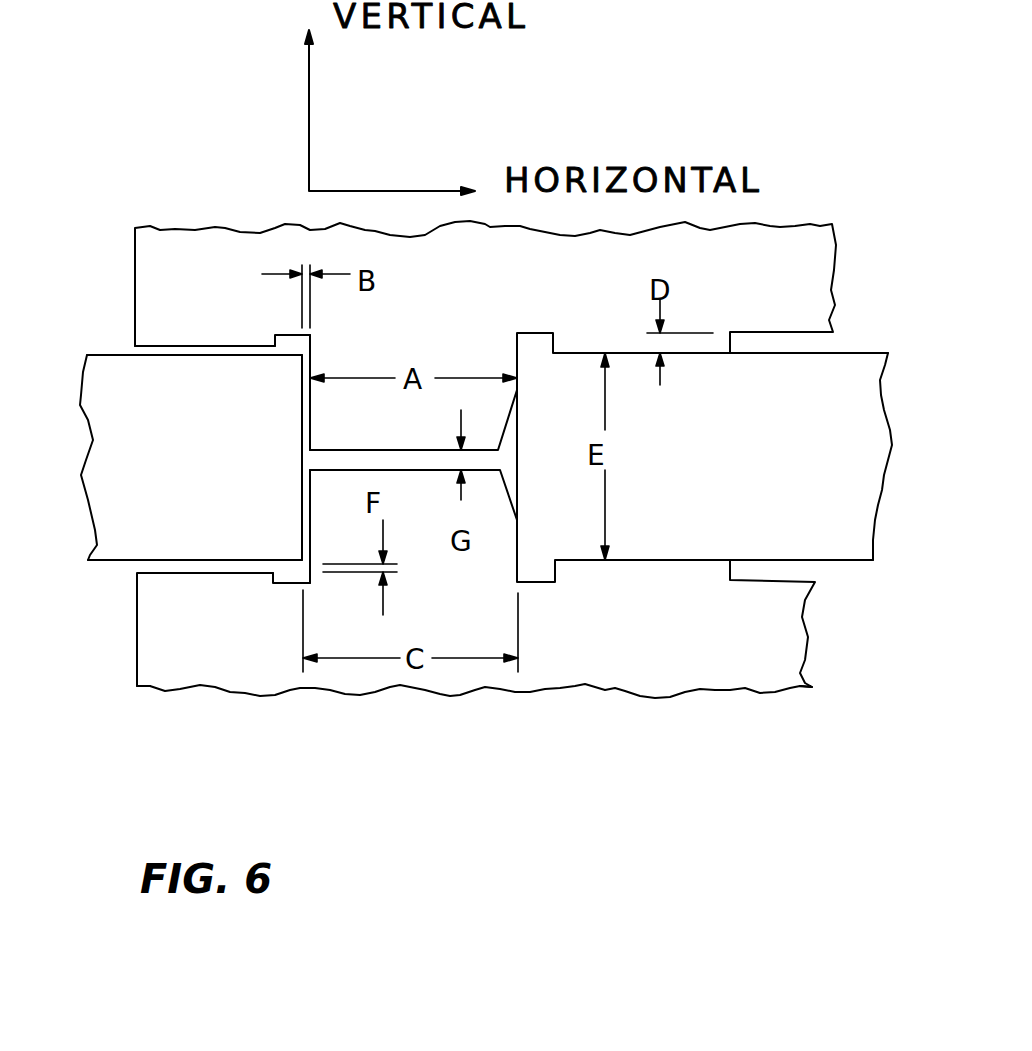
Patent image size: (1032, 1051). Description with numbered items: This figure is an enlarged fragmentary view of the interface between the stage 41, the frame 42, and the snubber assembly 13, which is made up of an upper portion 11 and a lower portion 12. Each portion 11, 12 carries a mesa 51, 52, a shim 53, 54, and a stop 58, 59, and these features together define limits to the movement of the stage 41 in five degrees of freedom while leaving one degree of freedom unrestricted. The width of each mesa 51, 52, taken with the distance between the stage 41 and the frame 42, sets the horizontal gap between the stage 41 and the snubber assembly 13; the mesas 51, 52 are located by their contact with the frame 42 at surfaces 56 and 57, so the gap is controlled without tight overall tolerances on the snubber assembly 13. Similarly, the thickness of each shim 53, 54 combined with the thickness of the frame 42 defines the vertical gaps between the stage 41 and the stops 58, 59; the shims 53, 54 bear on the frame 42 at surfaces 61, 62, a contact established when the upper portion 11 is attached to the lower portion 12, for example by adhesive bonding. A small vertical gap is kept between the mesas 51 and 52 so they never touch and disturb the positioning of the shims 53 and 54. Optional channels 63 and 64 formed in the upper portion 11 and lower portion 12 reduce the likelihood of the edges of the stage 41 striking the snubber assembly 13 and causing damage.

The upper portion 11 is at (184, 252).
The lower portion 12 is at (230, 665).
The snubber assembly 13 is at (665, 715).
The stage 41 is at (82, 402).
The frame 42 is at (877, 540).
The mesa 51 is at (324, 430).
The mesa 52 is at (324, 492).
The shim 53 is at (735, 342).
The shim 54 is at (735, 565).
The surface 56 is at (518, 386).
The surface 57 is at (519, 535).
The stop 58 is at (192, 356).
The stop 59 is at (192, 560).
The surface 61 is at (572, 350).
The surface 62 is at (655, 562).
The channel 63 is at (286, 330).
The channel 64 is at (280, 590).